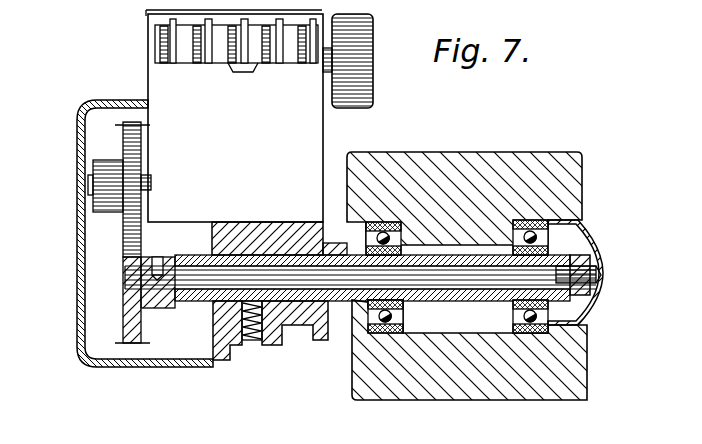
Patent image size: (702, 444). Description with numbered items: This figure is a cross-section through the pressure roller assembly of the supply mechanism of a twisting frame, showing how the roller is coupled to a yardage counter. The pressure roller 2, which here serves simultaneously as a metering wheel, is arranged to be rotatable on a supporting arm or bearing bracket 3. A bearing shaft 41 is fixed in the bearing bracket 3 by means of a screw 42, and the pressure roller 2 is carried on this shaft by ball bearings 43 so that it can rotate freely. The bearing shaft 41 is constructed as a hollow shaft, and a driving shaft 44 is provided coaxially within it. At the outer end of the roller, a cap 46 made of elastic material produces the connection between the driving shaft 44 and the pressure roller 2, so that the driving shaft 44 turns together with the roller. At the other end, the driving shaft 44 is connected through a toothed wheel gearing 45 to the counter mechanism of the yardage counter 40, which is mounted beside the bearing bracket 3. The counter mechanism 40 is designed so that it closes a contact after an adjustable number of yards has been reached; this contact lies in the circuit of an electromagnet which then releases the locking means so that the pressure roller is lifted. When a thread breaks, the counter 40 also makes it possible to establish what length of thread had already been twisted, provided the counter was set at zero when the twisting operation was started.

The pressure roller 2 is at (583, 170).
The bearing bracket 3 is at (296, 320).
The yardage counter 40 is at (163, 96).
The bearing shaft 41 is at (473, 248).
The screw 42 is at (258, 342).
The ball bearings 43 is at (530, 335).
The driving shaft 44 is at (588, 286).
The toothed wheel gearing 45 is at (135, 312).
The cap 46 is at (596, 262).